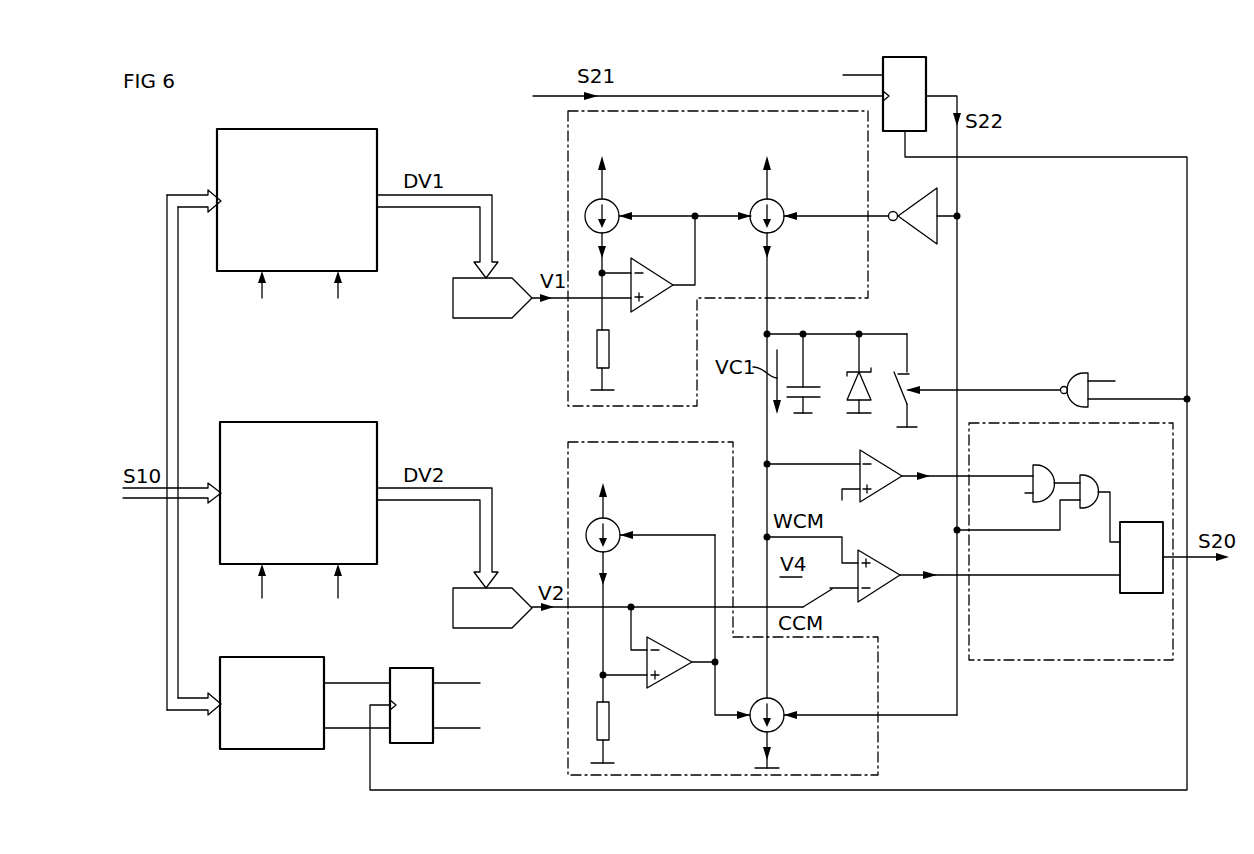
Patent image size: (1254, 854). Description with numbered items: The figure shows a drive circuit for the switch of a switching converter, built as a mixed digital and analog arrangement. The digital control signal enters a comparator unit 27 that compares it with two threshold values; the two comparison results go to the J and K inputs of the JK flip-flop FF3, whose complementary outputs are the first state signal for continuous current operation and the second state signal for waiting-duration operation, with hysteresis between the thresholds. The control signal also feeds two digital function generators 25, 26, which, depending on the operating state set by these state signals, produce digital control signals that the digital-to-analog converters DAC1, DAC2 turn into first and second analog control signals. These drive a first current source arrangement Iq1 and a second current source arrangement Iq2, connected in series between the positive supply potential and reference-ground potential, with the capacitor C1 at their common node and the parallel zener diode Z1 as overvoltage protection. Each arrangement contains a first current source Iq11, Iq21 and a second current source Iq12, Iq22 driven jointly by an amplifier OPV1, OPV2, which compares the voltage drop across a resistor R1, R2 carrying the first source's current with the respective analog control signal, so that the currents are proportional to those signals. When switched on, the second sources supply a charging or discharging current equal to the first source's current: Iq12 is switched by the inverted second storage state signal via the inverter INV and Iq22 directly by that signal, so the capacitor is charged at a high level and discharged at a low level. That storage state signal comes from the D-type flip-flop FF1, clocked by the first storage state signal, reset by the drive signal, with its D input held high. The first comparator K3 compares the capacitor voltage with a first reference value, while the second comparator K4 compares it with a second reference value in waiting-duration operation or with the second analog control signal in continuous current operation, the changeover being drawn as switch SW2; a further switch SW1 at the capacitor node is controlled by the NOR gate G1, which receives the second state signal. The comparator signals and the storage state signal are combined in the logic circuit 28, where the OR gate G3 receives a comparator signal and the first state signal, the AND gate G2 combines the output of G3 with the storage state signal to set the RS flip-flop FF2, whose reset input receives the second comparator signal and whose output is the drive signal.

The digital function generator 25 is at (300, 129).
The digital function generator 26 is at (298, 422).
The comparator unit 27 is at (326, 670).
The logic circuit 28 is at (1075, 660).
The digital-to-analog converter DAC1 is at (487, 318).
The digital-to-analog converter DAC2 is at (453, 597).
The D-type flip-flop FF1 is at (927, 83).
The RS flip-flop FF2 is at (1135, 593).
The JK flip-flop FF3 is at (412, 668).
The first current source arrangement Iq1 is at (568, 156).
The second current source arrangement Iq2 is at (568, 490).
The first current source Iq11 is at (617, 205).
The second current source Iq12 is at (758, 204).
The first current source Iq21 is at (616, 520).
The second current source Iq22 is at (761, 738).
The amplifier OPV1 is at (655, 300).
The amplifier OPV2 is at (670, 680).
The resistor R1 is at (609, 349).
The resistor R2 is at (609, 722).
The inverter INV is at (920, 232).
The capacitor C1 is at (815, 397).
The zener diode Z1 is at (868, 394).
The switch SW1 is at (907, 380).
The switch SW2 is at (811, 601).
The comparator K3 is at (885, 490).
The comparator K4 is at (885, 585).
The NOR gate G1 is at (1076, 374).
The AND gate G2 is at (1085, 510).
The OR gate G3 is at (1047, 465).